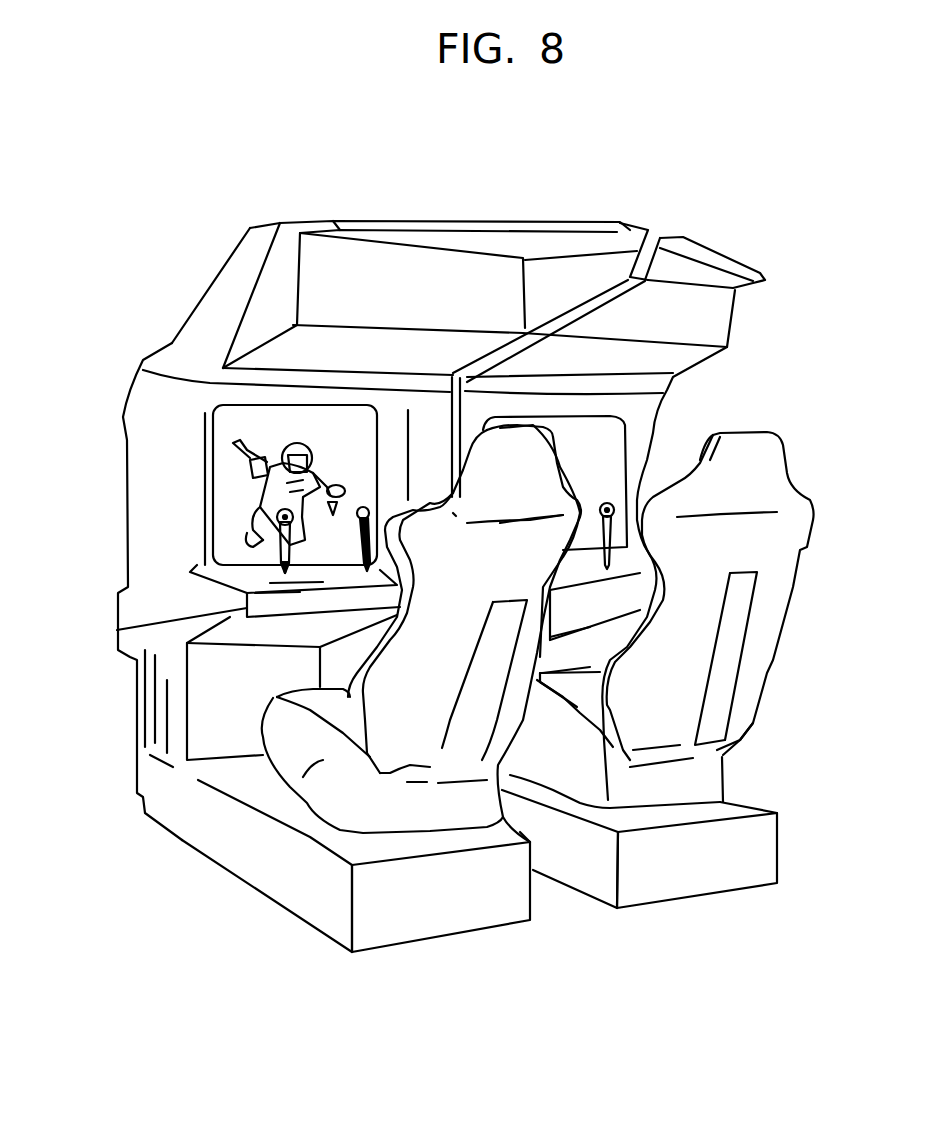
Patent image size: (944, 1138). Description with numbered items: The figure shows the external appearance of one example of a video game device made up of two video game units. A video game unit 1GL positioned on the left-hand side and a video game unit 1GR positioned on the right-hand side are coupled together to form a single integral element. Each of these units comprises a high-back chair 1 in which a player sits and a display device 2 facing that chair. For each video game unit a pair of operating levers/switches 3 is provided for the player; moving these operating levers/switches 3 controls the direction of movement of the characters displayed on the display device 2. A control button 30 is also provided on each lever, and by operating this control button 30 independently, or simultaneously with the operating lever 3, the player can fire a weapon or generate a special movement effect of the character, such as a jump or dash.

The high-back chair 1 is at (303, 805).
The display device 2 is at (230, 488).
The operating lever/switch 3 is at (355, 542).
The control button 30 is at (277, 531).
The video game unit 1GL is at (520, 969).
The video game unit 1GR is at (758, 930).